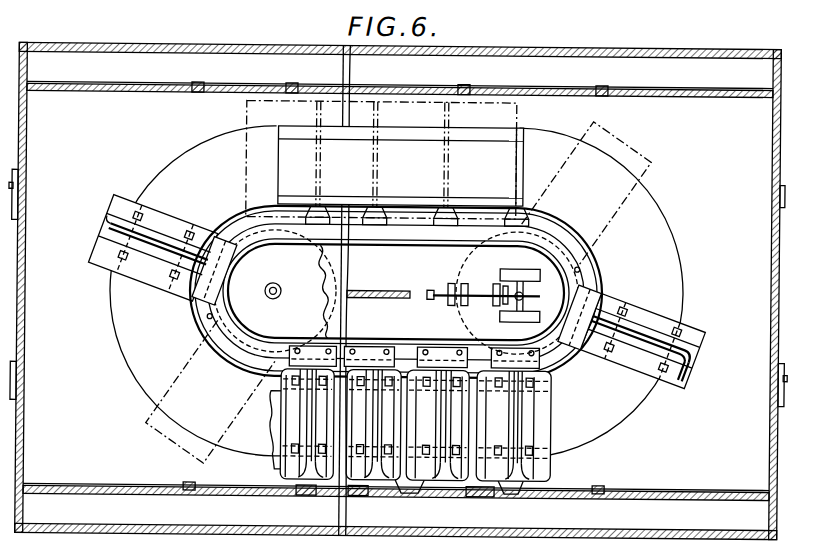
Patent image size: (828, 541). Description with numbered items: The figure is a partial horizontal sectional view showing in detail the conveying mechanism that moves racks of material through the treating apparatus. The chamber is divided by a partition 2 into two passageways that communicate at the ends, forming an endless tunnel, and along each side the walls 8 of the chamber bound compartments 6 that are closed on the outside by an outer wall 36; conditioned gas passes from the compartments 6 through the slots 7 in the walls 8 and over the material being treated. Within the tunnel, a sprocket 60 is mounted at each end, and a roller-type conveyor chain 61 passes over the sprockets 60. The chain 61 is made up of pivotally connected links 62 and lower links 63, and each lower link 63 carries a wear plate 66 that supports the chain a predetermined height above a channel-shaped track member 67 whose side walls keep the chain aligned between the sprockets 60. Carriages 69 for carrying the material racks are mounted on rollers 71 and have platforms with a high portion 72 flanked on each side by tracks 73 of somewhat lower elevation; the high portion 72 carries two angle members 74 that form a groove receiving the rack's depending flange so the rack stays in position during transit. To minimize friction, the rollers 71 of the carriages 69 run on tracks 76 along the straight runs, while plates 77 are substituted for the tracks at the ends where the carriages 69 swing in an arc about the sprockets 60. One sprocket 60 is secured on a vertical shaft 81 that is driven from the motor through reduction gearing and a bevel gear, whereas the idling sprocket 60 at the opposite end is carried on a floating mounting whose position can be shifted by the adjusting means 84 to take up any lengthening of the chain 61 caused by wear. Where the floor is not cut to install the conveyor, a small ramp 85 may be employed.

The partition 2 is at (390, 290).
The compartments 6 is at (188, 64).
The slots 7 is at (255, 88).
The walls 8 is at (132, 90).
The outer wall 36 is at (147, 47).
The sprocket 60 is at (322, 314).
The conveyor chain 61 is at (258, 372).
The links 62 is at (218, 310).
The lower links 63 is at (226, 234).
The wear plate 66 is at (695, 366).
The track member 67 is at (213, 323).
The carriages 69 is at (290, 485).
The rollers 71 is at (133, 271).
The high portion 72 is at (163, 272).
The tracks 73 is at (180, 230).
The angle members 74 is at (157, 220).
The tracks 76 is at (503, 135).
The plates 77 is at (128, 342).
The vertical shaft 81 is at (279, 287).
The adjusting means 84 is at (470, 282).
The ramp 85 is at (26, 278).